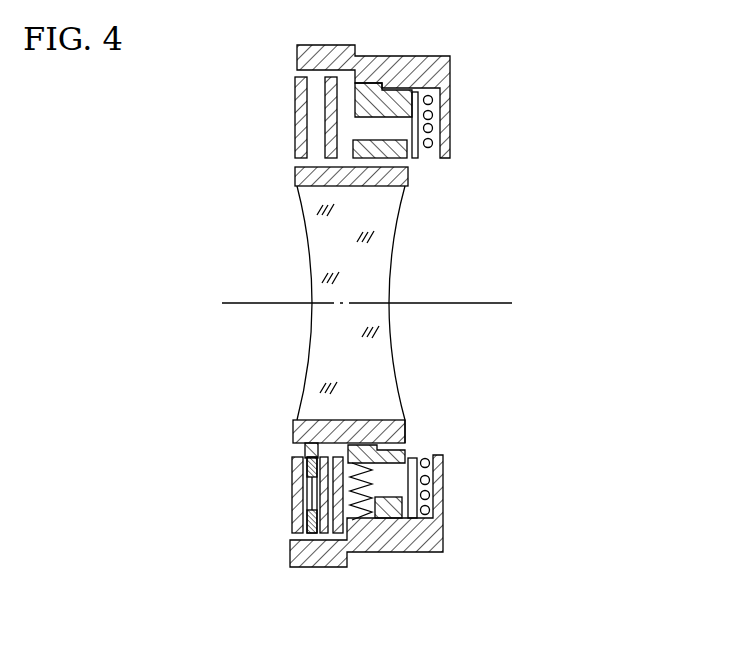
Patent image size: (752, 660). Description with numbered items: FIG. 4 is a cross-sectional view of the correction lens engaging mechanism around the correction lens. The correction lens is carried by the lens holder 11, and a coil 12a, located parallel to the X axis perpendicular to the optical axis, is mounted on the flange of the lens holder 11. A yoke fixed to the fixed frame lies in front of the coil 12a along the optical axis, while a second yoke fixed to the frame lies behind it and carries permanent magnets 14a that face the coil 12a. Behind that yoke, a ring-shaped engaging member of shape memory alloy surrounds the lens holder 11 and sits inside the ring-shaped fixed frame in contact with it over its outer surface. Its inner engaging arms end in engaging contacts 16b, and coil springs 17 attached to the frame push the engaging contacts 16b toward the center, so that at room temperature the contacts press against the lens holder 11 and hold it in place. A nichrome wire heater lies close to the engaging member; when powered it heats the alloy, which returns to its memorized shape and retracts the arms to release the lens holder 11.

The lens holder 11 is at (405, 420).
The coil 12a is at (307, 487).
The permanent magnets 14a is at (312, 445).
The engaging contacts 16b is at (405, 440).
The coil springs 17 is at (380, 552).